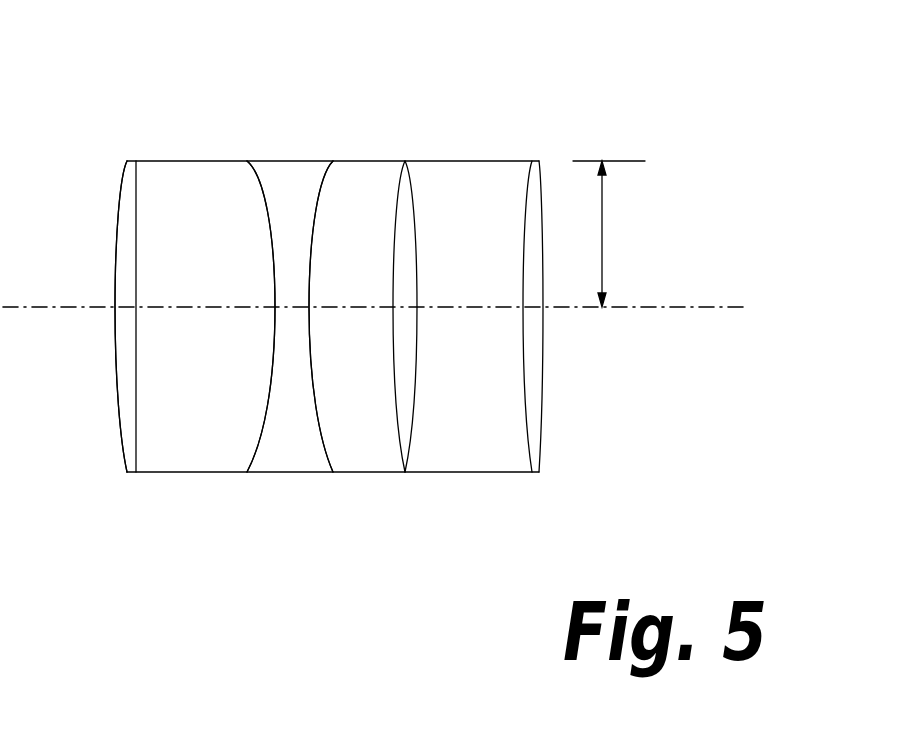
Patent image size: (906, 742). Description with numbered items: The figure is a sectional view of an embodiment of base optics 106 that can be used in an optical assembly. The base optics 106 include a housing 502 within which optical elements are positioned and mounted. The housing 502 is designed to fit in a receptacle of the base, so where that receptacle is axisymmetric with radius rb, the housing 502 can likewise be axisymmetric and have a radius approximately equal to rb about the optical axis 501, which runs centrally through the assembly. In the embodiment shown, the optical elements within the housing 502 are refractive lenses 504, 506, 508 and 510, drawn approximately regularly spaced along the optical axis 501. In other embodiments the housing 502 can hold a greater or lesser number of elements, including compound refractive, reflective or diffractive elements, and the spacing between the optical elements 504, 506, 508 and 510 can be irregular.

The base optics 106 is at (522, 62).
The optical axis 501 is at (702, 308).
The housing 502 is at (212, 473).
The refractive lens 504 is at (133, 185).
The refractive lens 506 is at (273, 172).
The refractive lens 508 is at (408, 170).
The refractive lens 510 is at (537, 173).
The radius rb is at (609, 234).